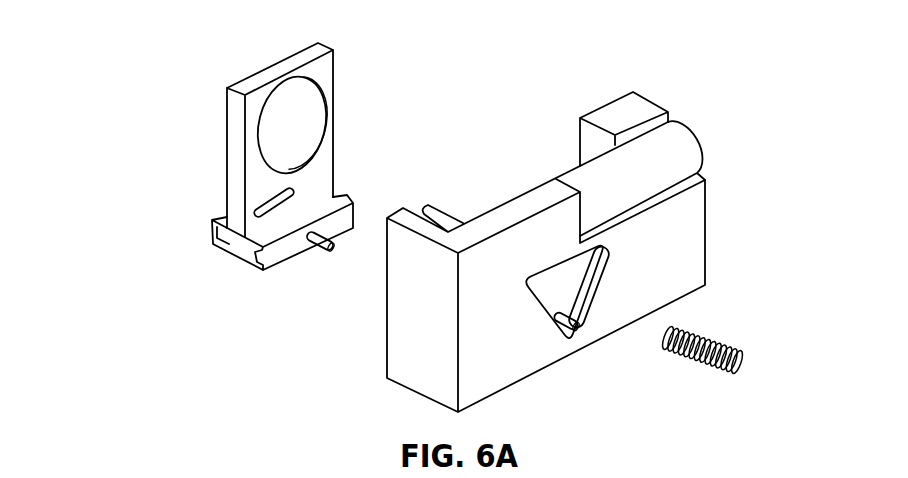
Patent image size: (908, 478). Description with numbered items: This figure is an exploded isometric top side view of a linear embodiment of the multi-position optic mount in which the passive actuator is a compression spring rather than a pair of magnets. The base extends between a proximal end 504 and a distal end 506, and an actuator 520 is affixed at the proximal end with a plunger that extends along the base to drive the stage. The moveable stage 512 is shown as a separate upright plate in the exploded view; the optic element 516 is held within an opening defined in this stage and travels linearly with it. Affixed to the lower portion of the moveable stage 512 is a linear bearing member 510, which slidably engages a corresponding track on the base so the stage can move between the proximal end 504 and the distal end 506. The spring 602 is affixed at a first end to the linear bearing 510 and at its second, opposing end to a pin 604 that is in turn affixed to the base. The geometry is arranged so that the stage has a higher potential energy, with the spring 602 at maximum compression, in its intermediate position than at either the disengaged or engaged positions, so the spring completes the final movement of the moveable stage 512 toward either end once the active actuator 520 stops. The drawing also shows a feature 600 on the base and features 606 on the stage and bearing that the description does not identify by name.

The proximal end 504 is at (640, 107).
The distal end 506 is at (430, 348).
The linear bearing member 510 is at (211, 231).
The moveable stage 512 is at (237, 118).
The optic element 516 is at (295, 120).
The actuator 520 is at (677, 153).
The triangular opening 600 is at (604, 292).
The spring 602 is at (745, 359).
The pin 604 is at (580, 323).
The slot and pin 606 is at (267, 203).